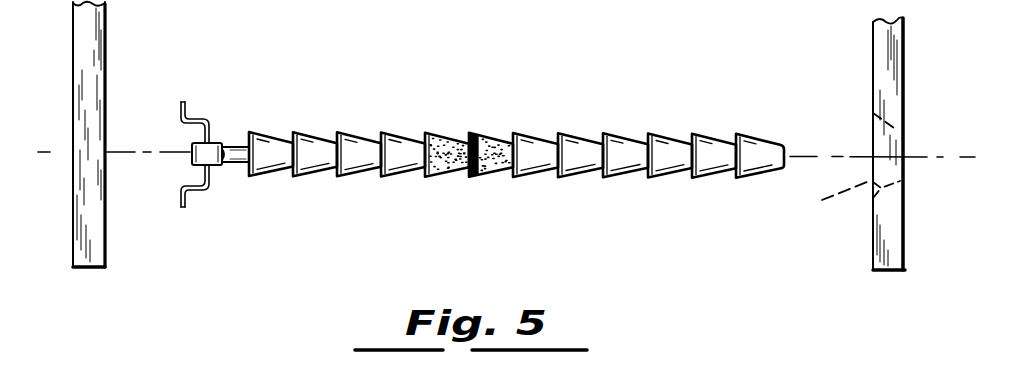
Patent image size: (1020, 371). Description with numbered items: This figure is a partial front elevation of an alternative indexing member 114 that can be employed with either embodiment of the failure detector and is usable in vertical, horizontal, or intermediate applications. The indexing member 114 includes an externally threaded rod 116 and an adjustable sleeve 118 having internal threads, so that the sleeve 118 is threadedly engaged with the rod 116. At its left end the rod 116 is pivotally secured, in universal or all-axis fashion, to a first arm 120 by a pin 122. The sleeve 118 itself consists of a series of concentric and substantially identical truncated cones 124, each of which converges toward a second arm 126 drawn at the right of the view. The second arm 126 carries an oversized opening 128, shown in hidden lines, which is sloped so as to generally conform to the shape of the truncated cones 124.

The indexing member 114 is at (516, 130).
The externally threaded rod 116 is at (229, 144).
The adjustable sleeve 118 is at (617, 160).
The first arm 120 is at (107, 52).
The pin 122 is at (202, 188).
The truncated cones 124 is at (702, 135).
The second arm 126 is at (870, 50).
The oversized opening 128 is at (826, 205).